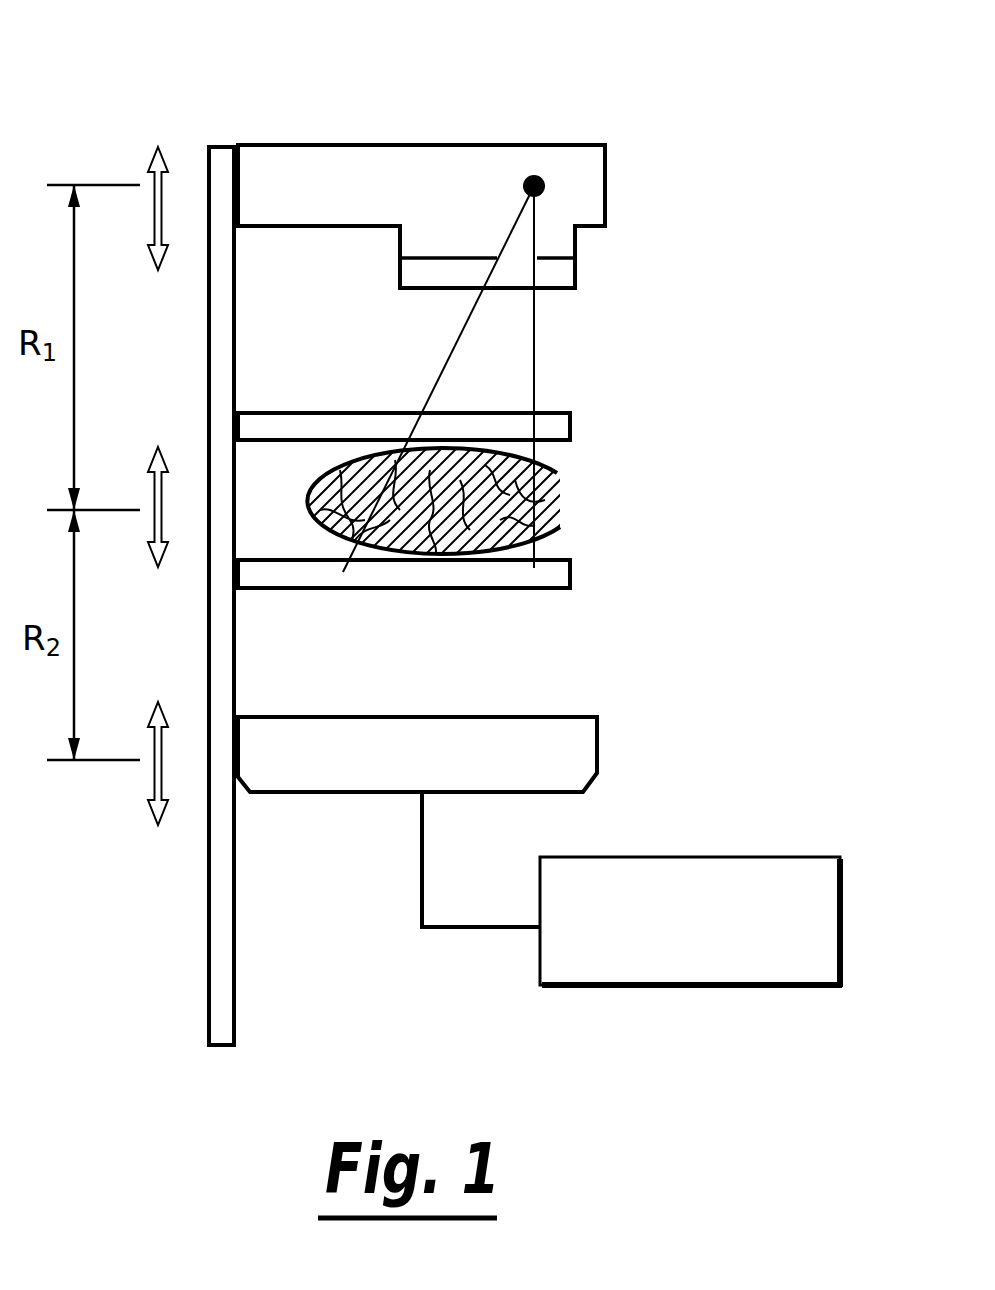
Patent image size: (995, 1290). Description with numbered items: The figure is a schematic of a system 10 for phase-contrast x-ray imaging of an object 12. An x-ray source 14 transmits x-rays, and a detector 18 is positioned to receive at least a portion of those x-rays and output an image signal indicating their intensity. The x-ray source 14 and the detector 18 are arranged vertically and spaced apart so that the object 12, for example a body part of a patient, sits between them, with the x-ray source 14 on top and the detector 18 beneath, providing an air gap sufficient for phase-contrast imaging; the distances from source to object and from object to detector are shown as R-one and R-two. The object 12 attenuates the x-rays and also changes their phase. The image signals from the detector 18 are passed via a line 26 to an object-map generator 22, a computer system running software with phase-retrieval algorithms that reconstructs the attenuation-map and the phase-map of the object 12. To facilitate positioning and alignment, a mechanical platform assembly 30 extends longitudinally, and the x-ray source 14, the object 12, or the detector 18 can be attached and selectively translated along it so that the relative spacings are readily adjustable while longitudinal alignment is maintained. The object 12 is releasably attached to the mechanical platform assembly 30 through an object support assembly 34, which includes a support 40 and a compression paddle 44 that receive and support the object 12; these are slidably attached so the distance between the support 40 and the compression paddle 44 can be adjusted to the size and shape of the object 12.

The system for phase-contrast x-ray imaging 10 is at (170, 95).
The object 12 is at (552, 503).
The x-ray source 14 is at (607, 165).
The detector 18 is at (583, 790).
The object-map generator 22 is at (687, 985).
The line 26 is at (418, 870).
The mechanical platform assembly 30 is at (203, 350).
The object support assembly 34 is at (587, 608).
The support 40 is at (427, 590).
The compression paddle 44 is at (568, 412).